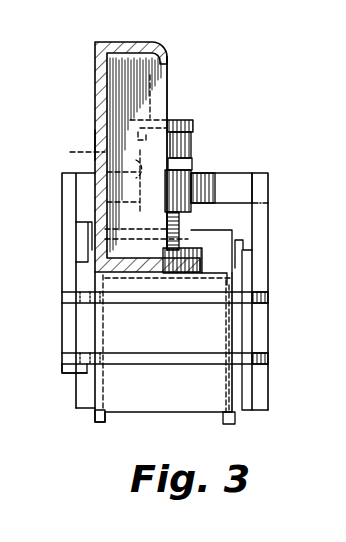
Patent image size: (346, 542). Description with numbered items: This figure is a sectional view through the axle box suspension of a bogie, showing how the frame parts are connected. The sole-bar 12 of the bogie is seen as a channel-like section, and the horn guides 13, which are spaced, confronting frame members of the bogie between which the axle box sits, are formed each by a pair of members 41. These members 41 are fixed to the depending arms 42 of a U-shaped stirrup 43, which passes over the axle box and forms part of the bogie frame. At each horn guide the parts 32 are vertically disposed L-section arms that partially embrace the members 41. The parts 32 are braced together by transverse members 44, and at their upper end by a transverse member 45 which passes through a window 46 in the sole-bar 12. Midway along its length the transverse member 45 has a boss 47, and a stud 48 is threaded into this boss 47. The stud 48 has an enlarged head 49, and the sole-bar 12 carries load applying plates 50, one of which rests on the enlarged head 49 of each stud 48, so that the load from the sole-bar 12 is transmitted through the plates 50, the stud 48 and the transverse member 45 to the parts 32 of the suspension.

The sole-bar 12 is at (126, 100).
The horn guides 13 is at (86, 241).
The parts 32 is at (68, 258).
The members 41 is at (80, 396).
The depending arms 42 is at (169, 411).
The U-shaped stirrup 43 is at (193, 239).
The transverse members 44 is at (163, 300).
The transverse member 45 is at (100, 143).
The window 46 is at (100, 153).
The boss 47 is at (238, 181).
The stud 48 is at (182, 180).
The enlarged head 49 is at (188, 141).
The load applying plates 50 is at (182, 124).